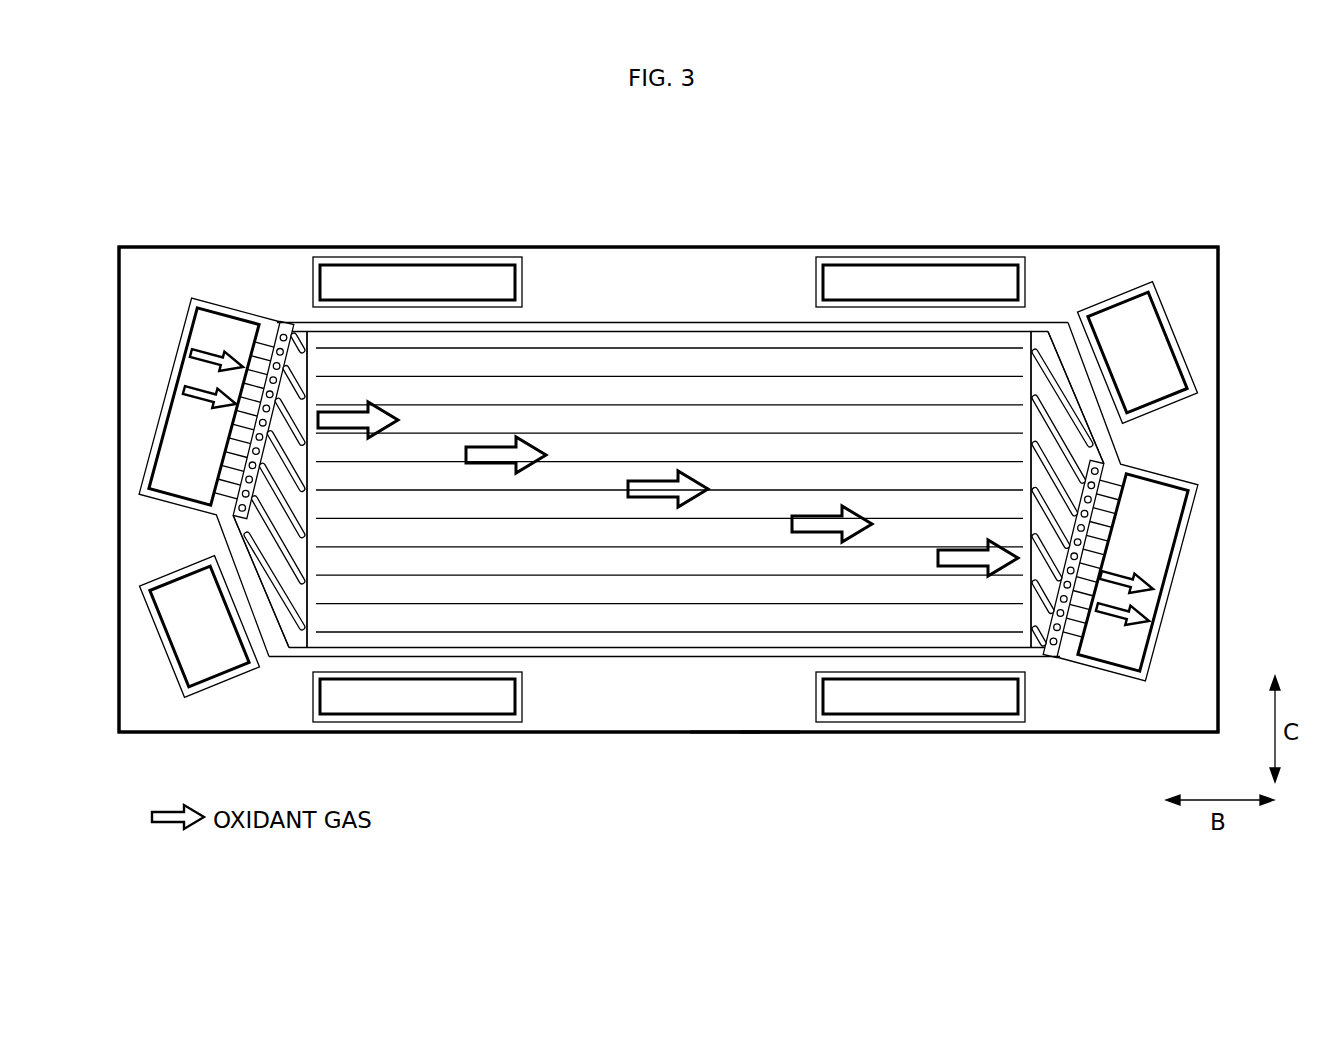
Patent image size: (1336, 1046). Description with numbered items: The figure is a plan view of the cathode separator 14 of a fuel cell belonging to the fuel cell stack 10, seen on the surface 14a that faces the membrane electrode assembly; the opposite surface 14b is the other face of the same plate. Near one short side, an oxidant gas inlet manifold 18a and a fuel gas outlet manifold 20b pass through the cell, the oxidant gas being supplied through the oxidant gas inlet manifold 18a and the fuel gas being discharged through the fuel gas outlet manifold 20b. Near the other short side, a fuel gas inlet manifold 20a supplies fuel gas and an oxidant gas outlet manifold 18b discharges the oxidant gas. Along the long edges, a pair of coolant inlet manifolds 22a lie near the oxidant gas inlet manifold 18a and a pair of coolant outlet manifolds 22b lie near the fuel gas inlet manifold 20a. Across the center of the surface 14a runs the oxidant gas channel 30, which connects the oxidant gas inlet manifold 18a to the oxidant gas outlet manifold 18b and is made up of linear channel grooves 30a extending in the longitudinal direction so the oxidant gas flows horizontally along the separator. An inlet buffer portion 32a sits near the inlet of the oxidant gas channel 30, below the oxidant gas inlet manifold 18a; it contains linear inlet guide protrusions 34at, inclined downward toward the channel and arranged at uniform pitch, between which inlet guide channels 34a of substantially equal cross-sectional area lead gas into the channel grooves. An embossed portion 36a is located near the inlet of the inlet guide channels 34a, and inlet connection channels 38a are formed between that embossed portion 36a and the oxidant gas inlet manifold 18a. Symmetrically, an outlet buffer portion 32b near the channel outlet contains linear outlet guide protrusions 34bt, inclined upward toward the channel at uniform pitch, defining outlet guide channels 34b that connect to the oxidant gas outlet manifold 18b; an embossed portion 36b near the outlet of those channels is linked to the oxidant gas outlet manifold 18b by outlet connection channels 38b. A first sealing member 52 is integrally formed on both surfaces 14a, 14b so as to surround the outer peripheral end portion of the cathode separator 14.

The fuel cell stack 10 is at (628, 133).
The cathode separator 14 is at (586, 133).
The surface 14a is at (727, 705).
The surface 14b is at (757, 690).
The oxidant gas inlet manifold 18a is at (182, 448).
The oxidant gas outlet manifold 18b is at (1153, 560).
The fuel gas inlet manifold 20a is at (1162, 372).
The fuel gas outlet manifold 20b is at (180, 633).
The coolant inlet manifolds 22a is at (417, 280).
The coolant outlet manifolds 22b is at (906, 278).
The oxidant gas channel 30 is at (576, 628).
The channel grooves 30a is at (643, 556).
The inlet buffer portion 32a is at (282, 641).
The outlet buffer portion 32b is at (1066, 338).
The inlet guide channels 34a is at (288, 564).
The linear inlet guide protrusions 34at is at (275, 512).
The outlet guide channels 34b is at (1050, 416).
The linear outlet guide protrusions 34bt is at (1062, 463).
The embossed portion 36a is at (284, 336).
The embossed portion 36b is at (1055, 643).
The inlet connection channels 38a is at (262, 355).
The outlet connection channels 38b is at (1075, 623).
The first sealing member 52 is at (574, 330).